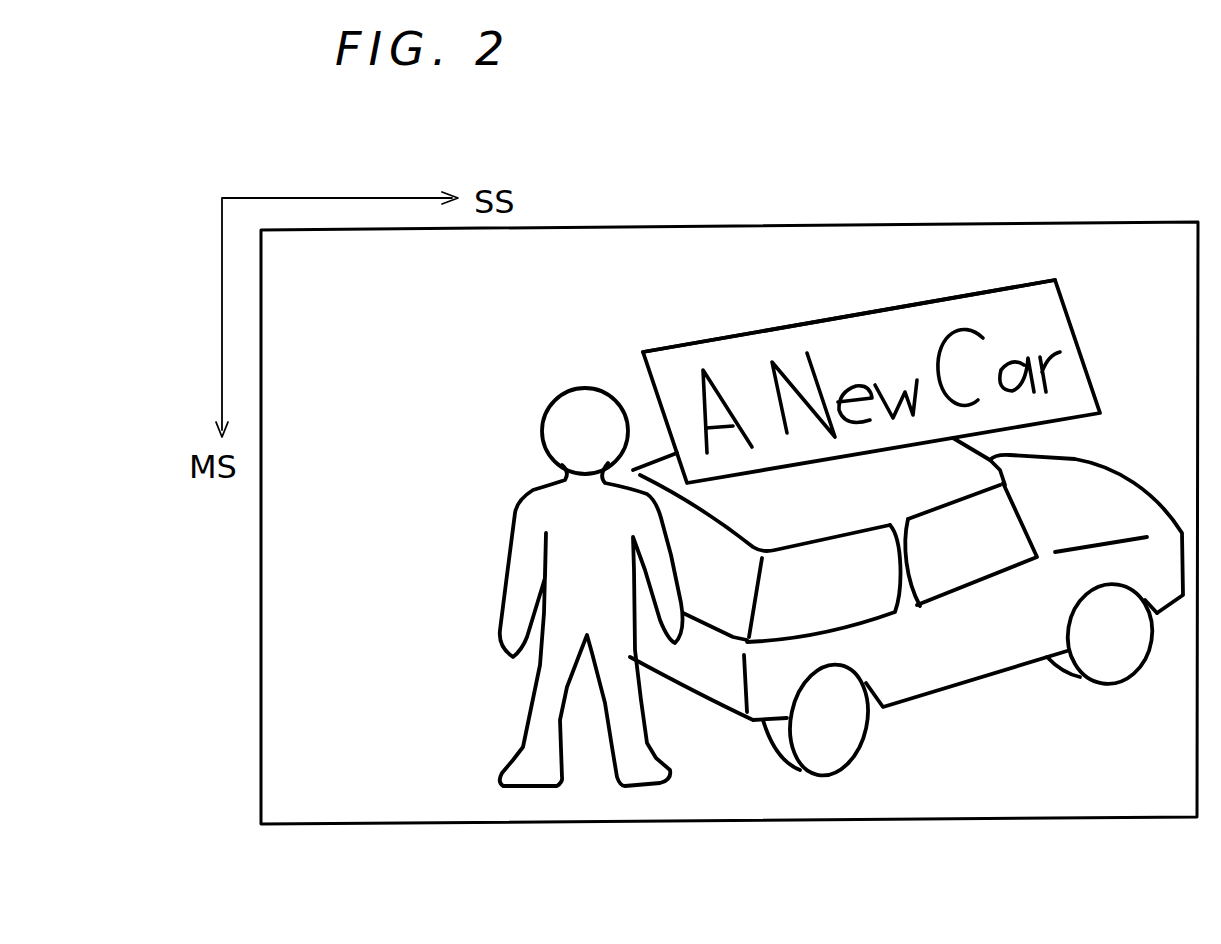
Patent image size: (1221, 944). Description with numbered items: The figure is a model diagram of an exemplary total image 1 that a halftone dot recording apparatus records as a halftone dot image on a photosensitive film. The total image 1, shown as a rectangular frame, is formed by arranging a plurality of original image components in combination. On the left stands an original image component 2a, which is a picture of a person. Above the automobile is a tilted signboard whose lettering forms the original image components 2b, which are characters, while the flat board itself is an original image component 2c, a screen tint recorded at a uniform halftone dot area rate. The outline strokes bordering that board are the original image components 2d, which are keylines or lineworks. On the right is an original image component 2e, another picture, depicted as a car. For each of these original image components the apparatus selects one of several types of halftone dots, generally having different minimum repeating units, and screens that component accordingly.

The total image 1 is at (459, 825).
The original image component (picture) 2a is at (540, 418).
The original image components (characters) 2b is at (782, 346).
The original image component (screen tint) 2c is at (865, 335).
The original image components (keylines) 2d is at (958, 292).
The original image component (another picture) 2e is at (968, 668).